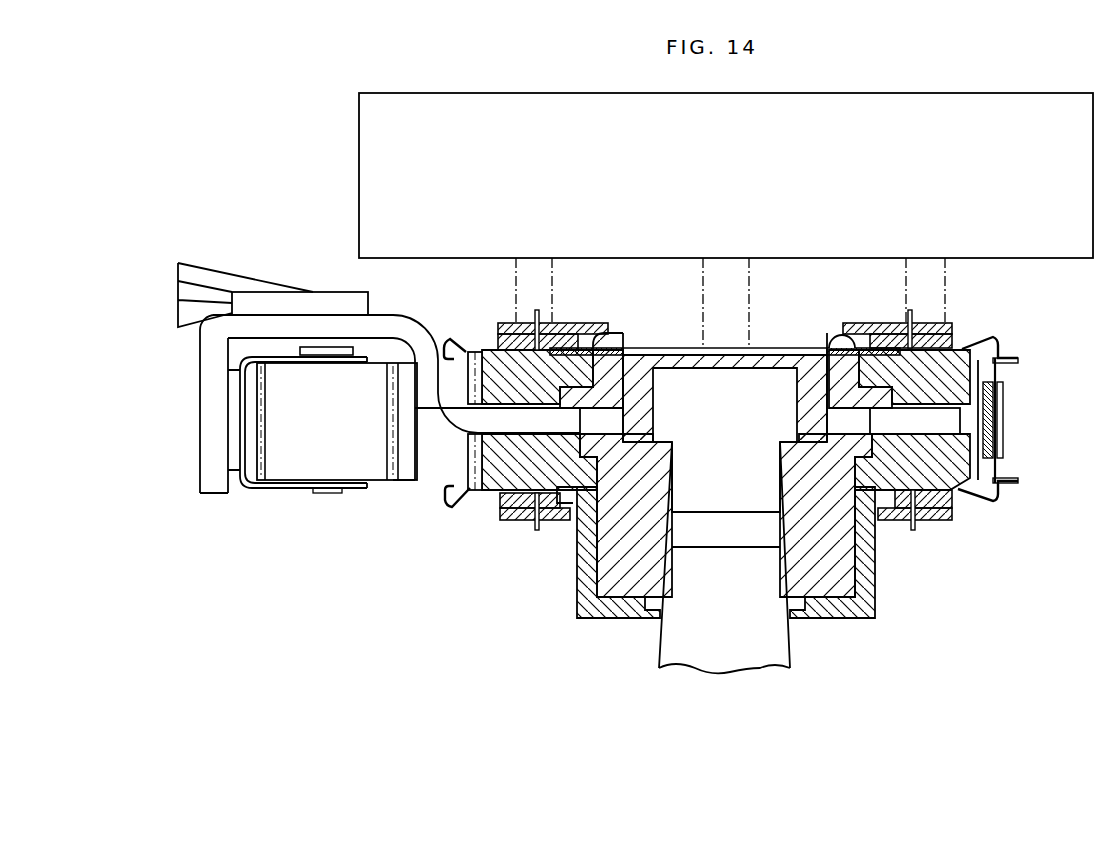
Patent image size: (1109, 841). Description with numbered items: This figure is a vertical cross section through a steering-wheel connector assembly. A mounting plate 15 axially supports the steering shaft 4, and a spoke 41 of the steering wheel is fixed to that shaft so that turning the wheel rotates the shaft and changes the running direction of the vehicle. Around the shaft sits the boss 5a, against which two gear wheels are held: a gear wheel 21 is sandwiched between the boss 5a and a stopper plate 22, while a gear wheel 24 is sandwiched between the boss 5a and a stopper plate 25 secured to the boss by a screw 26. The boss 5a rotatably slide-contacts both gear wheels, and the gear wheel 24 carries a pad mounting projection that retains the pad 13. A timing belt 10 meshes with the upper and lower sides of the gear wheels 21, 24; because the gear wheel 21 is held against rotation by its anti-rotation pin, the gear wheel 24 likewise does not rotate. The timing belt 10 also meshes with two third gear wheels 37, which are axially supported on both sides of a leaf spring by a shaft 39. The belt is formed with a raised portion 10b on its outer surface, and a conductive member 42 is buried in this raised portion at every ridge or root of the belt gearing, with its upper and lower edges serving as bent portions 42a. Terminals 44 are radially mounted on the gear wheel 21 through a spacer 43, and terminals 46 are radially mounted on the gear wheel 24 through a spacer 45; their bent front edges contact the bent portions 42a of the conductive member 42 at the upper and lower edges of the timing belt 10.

The steering shaft 4 is at (793, 650).
The boss 5a is at (600, 588).
The timing belt 10 is at (425, 462).
The raised portion 10b is at (1003, 428).
The pad 13 is at (790, 104).
The mounting plate 15 is at (215, 437).
The gear wheel 21 is at (998, 470).
The stopper plate 22 is at (882, 612).
The gear wheel 24 is at (1000, 392).
The stopper plate 25 is at (832, 352).
The screw 26 is at (840, 340).
The third gear wheel 37 is at (295, 468).
The shaft 39 is at (330, 349).
The spoke 41 is at (207, 270).
The conductive member 42 is at (1048, 415).
The bent portion 42a is at (1018, 353).
The spacer 43 is at (937, 495).
The terminal 44 is at (452, 509).
The spacer 45 is at (957, 340).
The terminal 46 is at (455, 342).